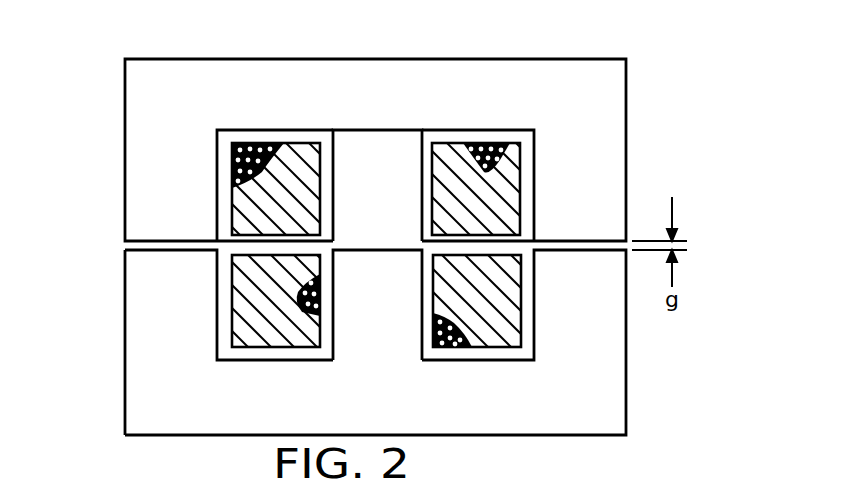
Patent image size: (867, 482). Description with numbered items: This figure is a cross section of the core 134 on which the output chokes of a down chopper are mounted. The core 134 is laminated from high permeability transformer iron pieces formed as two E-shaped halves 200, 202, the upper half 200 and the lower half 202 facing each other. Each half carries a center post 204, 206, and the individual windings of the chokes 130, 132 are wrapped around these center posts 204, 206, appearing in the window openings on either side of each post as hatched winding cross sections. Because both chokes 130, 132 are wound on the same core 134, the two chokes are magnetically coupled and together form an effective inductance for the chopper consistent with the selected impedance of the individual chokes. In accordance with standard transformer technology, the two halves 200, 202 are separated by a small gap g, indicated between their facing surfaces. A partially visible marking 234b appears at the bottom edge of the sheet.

The E-shaped half 200 is at (620, 82).
The E-shaped half 202 is at (620, 388).
The center post 204 is at (385, 183).
The center post 206 is at (355, 272).
The choke 130 is at (513, 179).
The choke 132 is at (508, 328).
The core 134 is at (123, 363).
The partially visible reference 234b is at (581, 476).